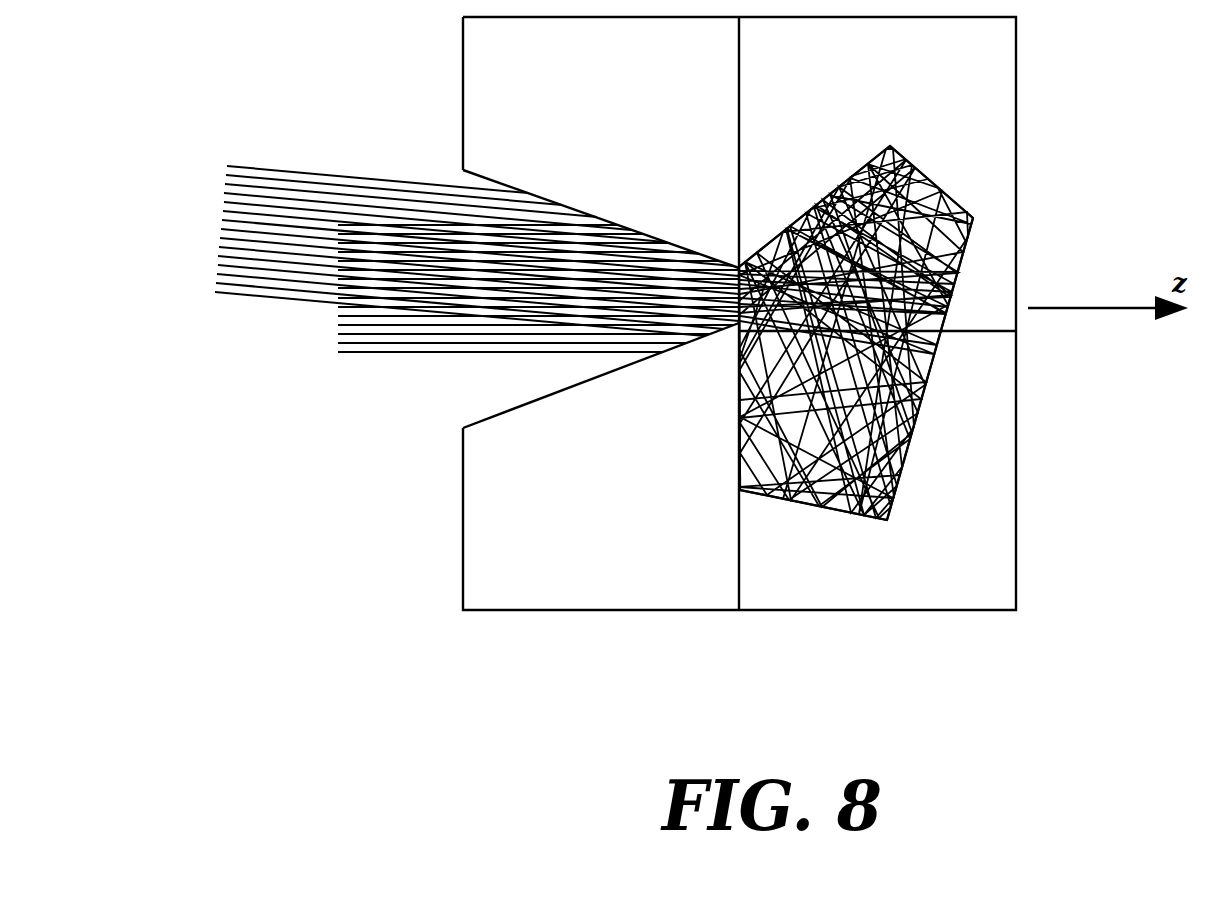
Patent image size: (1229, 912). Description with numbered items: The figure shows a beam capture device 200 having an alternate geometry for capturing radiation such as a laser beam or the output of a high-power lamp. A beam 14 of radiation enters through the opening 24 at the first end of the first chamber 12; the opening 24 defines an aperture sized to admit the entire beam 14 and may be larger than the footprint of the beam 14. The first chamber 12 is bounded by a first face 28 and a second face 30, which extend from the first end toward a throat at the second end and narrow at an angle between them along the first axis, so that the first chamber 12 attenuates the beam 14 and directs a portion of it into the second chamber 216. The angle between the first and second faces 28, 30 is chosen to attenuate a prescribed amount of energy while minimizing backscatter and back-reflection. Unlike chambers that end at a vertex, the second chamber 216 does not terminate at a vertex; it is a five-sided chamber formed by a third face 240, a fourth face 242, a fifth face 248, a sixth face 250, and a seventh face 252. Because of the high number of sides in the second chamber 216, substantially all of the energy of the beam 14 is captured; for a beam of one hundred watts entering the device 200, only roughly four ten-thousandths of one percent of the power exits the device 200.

The first chamber 12 is at (477, 311).
The beam 14 is at (290, 352).
The opening 24 is at (420, 376).
The first face 28 is at (486, 178).
The second face 30 is at (494, 410).
The device 200 is at (1098, 705).
The second chamber 216 is at (985, 185).
The third face 240 is at (929, 378).
The fourth face 242 is at (739, 407).
The fifth face 248 is at (848, 183).
The sixth face 250 is at (918, 170).
The seventh face 252 is at (820, 519).